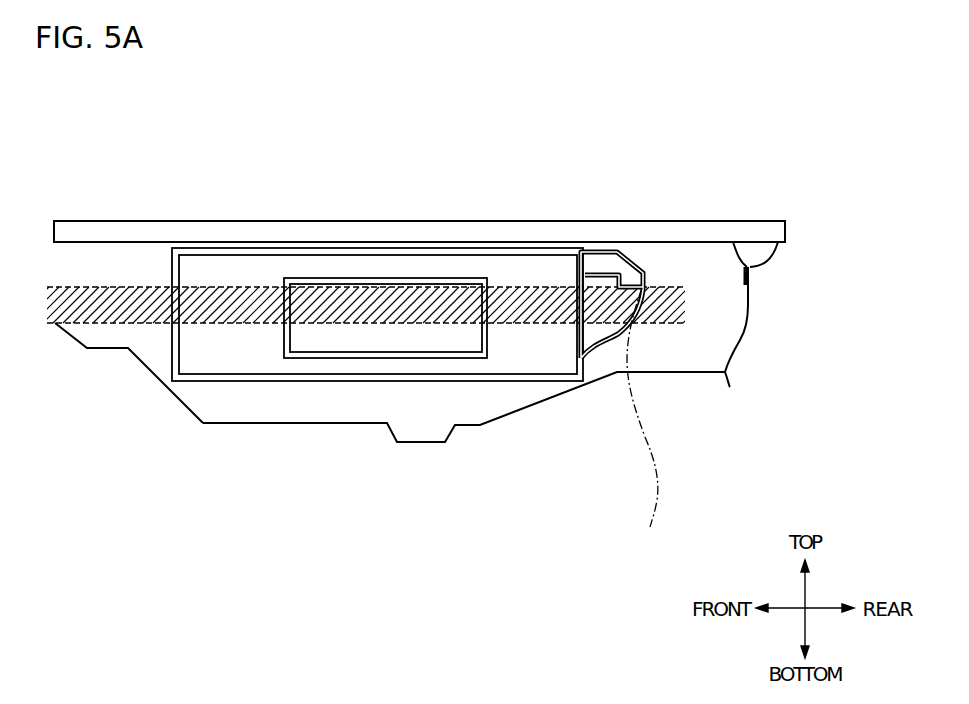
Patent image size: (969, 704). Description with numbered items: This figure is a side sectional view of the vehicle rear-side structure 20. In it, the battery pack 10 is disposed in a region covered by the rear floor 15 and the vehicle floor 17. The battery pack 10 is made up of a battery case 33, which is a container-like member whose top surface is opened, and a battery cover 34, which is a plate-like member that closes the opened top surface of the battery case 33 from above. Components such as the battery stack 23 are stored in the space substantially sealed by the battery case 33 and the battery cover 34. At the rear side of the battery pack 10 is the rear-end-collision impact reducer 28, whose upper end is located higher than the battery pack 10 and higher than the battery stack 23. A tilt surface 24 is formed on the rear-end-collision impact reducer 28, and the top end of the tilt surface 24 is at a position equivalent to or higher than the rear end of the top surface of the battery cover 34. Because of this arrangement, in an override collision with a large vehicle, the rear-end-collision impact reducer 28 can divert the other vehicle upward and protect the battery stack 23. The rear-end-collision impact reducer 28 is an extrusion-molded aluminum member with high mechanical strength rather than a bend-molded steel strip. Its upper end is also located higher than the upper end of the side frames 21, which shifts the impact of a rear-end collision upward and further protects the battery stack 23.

The battery pack 10 is at (510, 380).
The rear floor 15 is at (377, 221).
The vehicle floor 17 is at (162, 387).
The vehicle rear-side structure 20 is at (530, 110).
The side frame 21 is at (645, 420).
The battery stack 23 is at (345, 332).
The tilt surface 24 is at (636, 262).
The rear-end-collision impact reducer 28 is at (645, 288).
The battery case 33 is at (240, 375).
The battery cover 34 is at (210, 253).